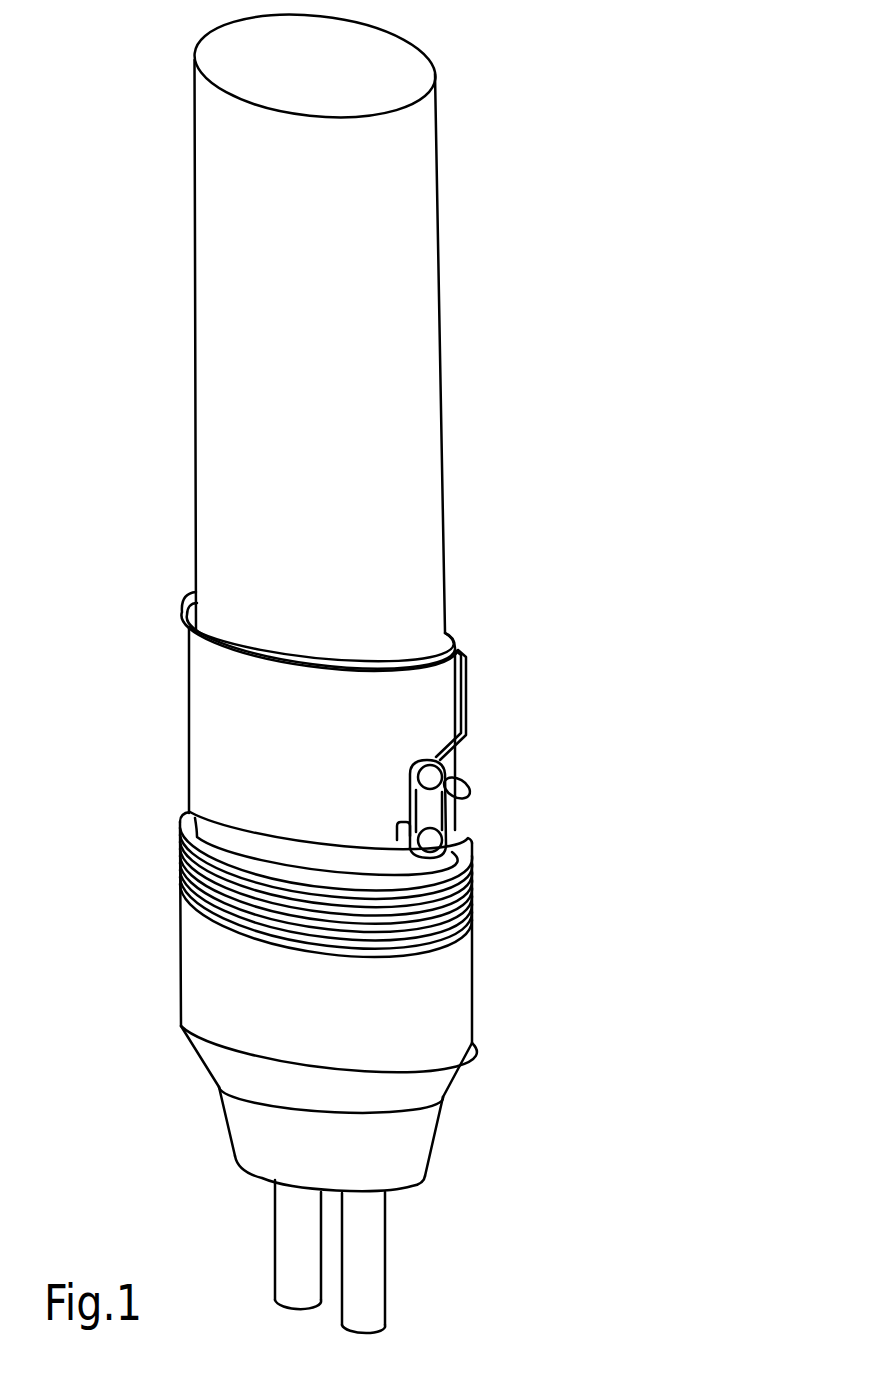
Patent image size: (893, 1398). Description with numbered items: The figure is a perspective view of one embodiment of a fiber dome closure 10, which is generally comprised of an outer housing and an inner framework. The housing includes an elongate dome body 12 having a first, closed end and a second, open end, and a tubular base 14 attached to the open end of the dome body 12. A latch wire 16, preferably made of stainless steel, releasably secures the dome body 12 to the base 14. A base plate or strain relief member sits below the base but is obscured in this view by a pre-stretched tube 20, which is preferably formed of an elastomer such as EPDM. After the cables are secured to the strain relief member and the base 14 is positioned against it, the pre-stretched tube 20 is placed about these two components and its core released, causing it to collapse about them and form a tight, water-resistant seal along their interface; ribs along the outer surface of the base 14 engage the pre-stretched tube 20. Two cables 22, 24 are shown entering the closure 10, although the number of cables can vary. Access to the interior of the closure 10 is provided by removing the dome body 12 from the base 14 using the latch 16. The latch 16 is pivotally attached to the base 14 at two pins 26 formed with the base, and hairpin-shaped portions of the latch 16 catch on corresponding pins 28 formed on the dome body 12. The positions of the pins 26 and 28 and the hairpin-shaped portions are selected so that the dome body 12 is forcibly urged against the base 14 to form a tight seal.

The closure 10 is at (529, 212).
The dome body 12 is at (435, 177).
The tubular base 14 is at (467, 848).
The latch wire 16 is at (467, 680).
The pre-stretched tube 20 is at (473, 1020).
The cable 22 is at (385, 1240).
The cable 24 is at (275, 1250).
The pins 26 is at (438, 843).
The pins 28 is at (431, 774).